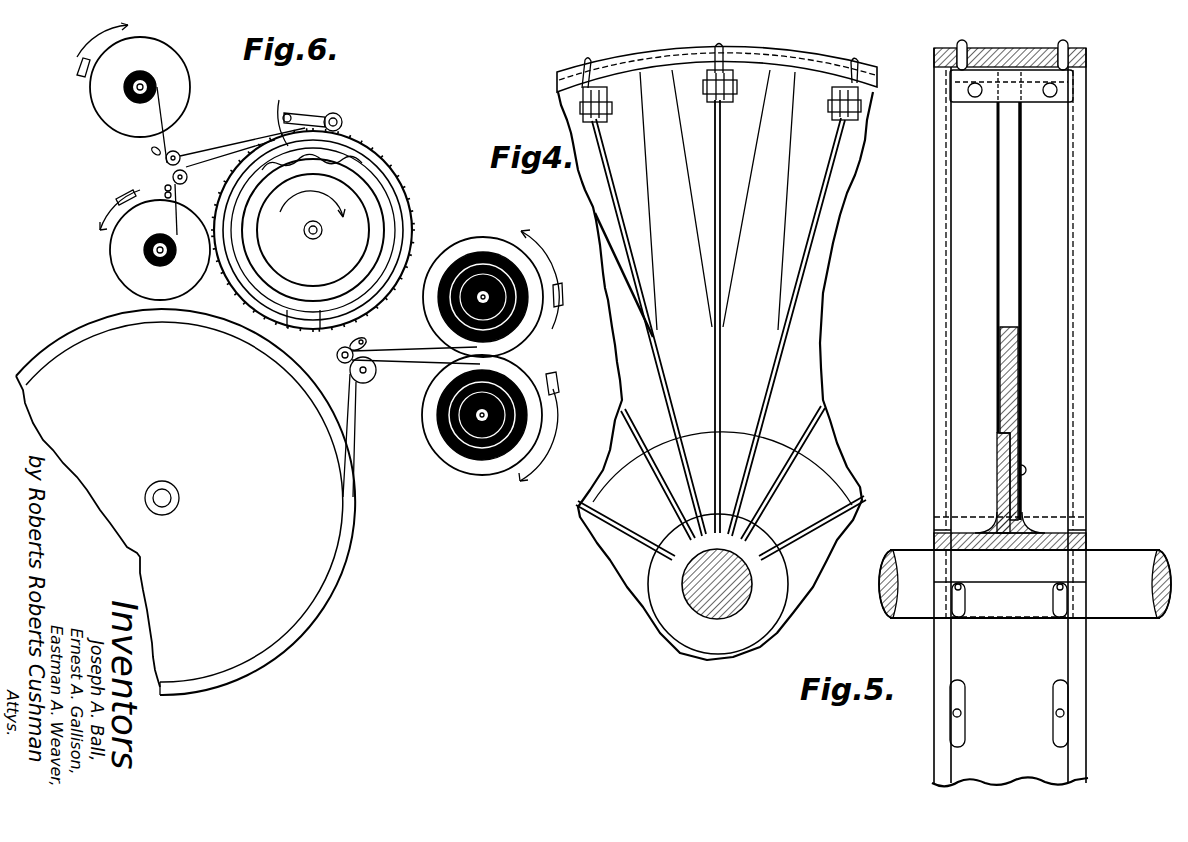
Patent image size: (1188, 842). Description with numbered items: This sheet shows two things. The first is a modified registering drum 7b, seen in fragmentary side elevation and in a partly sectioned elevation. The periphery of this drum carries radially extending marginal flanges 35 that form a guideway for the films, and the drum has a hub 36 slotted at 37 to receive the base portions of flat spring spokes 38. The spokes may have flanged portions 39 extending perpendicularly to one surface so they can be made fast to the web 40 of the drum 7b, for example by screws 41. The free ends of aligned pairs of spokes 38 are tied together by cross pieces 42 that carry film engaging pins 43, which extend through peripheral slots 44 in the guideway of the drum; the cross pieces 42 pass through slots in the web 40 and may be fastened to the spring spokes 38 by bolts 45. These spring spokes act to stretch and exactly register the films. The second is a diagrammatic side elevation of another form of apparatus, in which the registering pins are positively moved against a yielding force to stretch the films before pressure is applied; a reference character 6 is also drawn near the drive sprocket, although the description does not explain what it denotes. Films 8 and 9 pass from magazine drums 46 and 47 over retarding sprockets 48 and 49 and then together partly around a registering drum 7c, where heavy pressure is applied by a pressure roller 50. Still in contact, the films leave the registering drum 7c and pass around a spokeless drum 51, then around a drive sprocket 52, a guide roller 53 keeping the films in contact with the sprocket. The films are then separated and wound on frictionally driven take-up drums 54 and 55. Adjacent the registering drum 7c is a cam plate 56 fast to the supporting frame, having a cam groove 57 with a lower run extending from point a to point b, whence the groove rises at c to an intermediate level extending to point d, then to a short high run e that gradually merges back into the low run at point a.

In FIG. 4, the registering drum 7b is at (787, 86).
In FIG. 5, the registering drum 7b is at (1079, 386).
In FIG. 6, the registering drum 7c is at (370, 148).
In FIG. 6, the thread 6 is at (422, 366).
In FIG. 6, the film 8 is at (173, 192).
In FIG. 6, the film 9 is at (168, 153).
In FIG. 5, the marginal flanges 35 is at (950, 52).
In FIG. 4, the hub 36 is at (773, 606).
In FIG. 5, the hub 36 is at (1078, 540).
In FIG. 4, the slot 37 is at (672, 562).
In FIG. 5, the slot 37 is at (1066, 520).
In FIG. 4, the flat spring spokes 38 is at (662, 350).
In FIG. 5, the flat spring spokes 38 is at (970, 301).
In FIG. 5, the flanged portions 39 is at (997, 455).
In FIG. 4, the web 40 is at (790, 396).
In FIG. 5, the web 40 is at (1022, 417).
In FIG. 5, the screws 41 is at (1027, 472).
In FIG. 5, the cross pieces 42 is at (1073, 78).
In FIG. 5, the film engaging pins 43 is at (1063, 47).
In FIG. 5, the peripheral slots 44 is at (1062, 740).
In FIG. 5, the bolts 45 is at (1055, 95).
In FIG. 6, the magazine drum 46 is at (120, 237).
In FIG. 6, the magazine drum 47 is at (105, 93).
In FIG. 6, the retarding sprocket 48 is at (186, 172).
In FIG. 6, the retarding sprocket 49 is at (180, 156).
In FIG. 6, the pressure roller 50 is at (341, 115).
In FIG. 6, the spokeless drum 51 is at (92, 340).
In FIG. 6, the drive sprocket 52 is at (366, 384).
In FIG. 6, the guide roller 53 is at (368, 347).
In FIG. 6, the take-up drum 54 is at (490, 455).
In FIG. 6, the take-up drum 55 is at (478, 256).
In FIG. 6, the cam plate 56 is at (386, 180).
In FIG. 6, the cam groove 57 is at (380, 205).
In FIG. 6, the point a is at (357, 165).
In FIG. 6, the point b is at (318, 312).
In FIG. 6, the rise c is at (292, 325).
In FIG. 6, the point d is at (279, 113).
In FIG. 6, the high run e is at (318, 152).